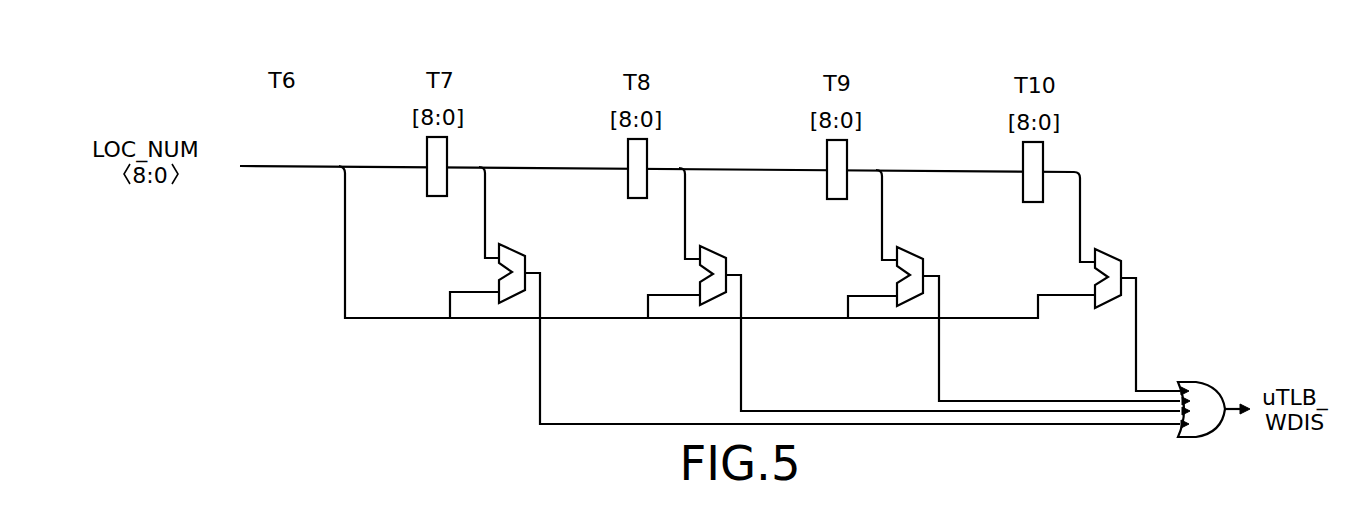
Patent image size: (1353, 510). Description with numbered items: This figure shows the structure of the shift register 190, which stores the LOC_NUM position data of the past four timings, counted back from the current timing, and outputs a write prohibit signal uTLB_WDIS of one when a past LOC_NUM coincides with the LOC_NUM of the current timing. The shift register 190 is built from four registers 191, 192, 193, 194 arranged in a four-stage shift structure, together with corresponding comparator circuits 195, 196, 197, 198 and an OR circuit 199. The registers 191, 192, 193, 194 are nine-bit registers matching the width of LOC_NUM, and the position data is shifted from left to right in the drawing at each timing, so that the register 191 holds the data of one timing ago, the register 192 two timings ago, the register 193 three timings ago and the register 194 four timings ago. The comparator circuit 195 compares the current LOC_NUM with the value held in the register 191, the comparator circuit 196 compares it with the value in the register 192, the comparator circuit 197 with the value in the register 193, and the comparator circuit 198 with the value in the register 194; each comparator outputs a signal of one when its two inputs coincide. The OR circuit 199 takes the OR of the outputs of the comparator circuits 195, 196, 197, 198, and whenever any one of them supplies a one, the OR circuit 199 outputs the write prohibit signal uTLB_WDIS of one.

The shift register 190 is at (1161, 81).
The register 191 is at (448, 150).
The register 192 is at (648, 151).
The register 193 is at (848, 152).
The register 194 is at (1044, 153).
The comparator circuit 195 is at (527, 262).
The comparator circuit 196 is at (728, 264).
The comparator circuit 197 is at (925, 265).
The comparator circuit 198 is at (1123, 266).
The OR circuit 199 is at (1203, 381).